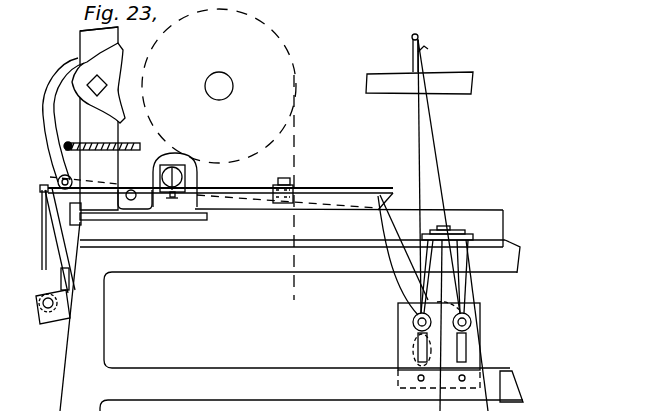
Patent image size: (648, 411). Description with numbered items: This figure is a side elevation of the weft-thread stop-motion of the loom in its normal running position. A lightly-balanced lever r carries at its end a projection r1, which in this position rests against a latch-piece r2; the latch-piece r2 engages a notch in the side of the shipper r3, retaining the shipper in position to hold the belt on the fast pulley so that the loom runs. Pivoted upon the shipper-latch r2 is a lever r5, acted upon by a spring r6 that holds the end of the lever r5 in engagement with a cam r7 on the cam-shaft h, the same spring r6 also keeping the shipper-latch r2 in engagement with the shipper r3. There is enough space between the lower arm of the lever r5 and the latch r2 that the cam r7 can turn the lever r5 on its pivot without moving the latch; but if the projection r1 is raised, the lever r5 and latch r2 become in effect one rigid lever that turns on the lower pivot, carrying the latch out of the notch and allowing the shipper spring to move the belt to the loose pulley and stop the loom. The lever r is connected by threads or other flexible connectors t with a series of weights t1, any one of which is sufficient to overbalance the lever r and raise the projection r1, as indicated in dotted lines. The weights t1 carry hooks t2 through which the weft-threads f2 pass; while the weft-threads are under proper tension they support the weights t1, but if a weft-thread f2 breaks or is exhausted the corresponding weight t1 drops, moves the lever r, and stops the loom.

The wheel a is at (219, 86).
The cam-shaft h is at (109, 72).
The lightly-balanced lever r is at (236, 189).
The projection r1 is at (42, 260).
The latch-piece r2 is at (50, 281).
The shipper r3 is at (80, 214).
The lever r5 is at (52, 115).
The spring r6 is at (0, 147).
The cam r7 is at (108, 56).
The weft-threads f2 is at (418, 140).
The threads or flexible connectors t is at (380, 214).
The weights t1 is at (412, 322).
The hooks t2 is at (437, 302).